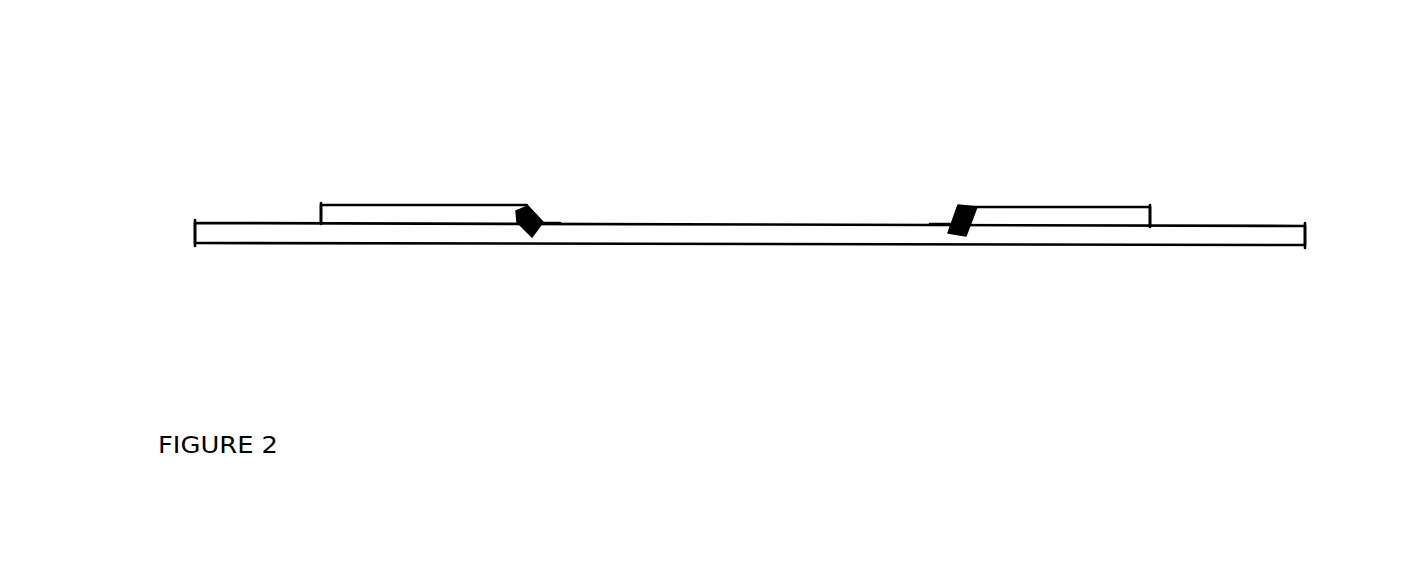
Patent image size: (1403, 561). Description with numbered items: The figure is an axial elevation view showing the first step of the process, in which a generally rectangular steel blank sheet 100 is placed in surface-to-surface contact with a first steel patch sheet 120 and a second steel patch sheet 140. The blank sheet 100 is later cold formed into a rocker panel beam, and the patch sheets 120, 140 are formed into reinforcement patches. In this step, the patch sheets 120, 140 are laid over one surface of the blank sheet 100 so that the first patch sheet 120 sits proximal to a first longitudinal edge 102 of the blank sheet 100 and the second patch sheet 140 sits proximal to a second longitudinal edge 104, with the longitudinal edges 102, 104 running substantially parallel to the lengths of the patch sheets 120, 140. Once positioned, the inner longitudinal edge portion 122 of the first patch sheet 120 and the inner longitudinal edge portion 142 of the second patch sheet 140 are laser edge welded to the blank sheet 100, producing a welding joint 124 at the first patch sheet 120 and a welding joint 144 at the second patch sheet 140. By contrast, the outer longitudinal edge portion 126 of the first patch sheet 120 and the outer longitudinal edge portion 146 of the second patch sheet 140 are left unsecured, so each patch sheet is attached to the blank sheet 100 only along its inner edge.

The steel blank sheet 100 is at (293, 232).
The first longitudinal edge 102 is at (195, 233).
The second longitudinal edge 104 is at (1310, 233).
The first steel patch sheet 120 is at (423, 207).
The inner longitudinal edge portion 122 is at (525, 207).
The welding joint 124 is at (542, 223).
The outer longitudinal edge portion 126 is at (320, 217).
The second steel patch sheet 140 is at (1087, 208).
The inner longitudinal edge portion 142 is at (970, 205).
The welding joint 144 is at (955, 213).
The outer longitudinal edge portion 146 is at (1153, 216).